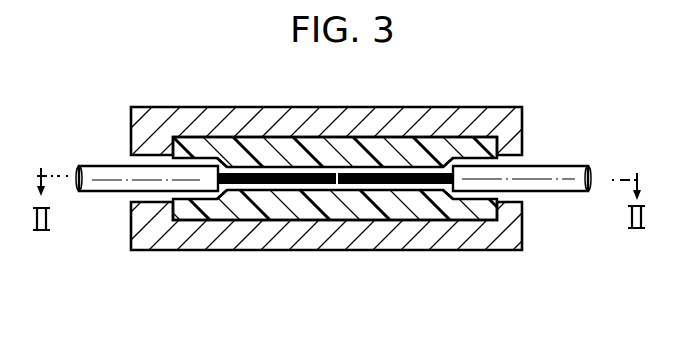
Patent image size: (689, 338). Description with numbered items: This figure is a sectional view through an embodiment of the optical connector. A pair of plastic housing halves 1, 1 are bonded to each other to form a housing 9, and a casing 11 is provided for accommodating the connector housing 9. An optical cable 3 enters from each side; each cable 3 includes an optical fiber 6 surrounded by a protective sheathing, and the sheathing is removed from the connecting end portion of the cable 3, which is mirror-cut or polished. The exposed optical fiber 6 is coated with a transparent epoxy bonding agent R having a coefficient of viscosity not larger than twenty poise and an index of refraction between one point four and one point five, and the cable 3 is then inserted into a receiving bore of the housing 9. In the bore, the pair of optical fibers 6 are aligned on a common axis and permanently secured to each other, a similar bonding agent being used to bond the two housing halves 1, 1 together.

The housing half 1 is at (371, 140).
The optical cable 3 is at (554, 165).
The optical fiber 6 is at (242, 193).
The housing 9 is at (271, 134).
The casing 11 is at (358, 238).
The transparent epoxy bonding agent R is at (301, 186).